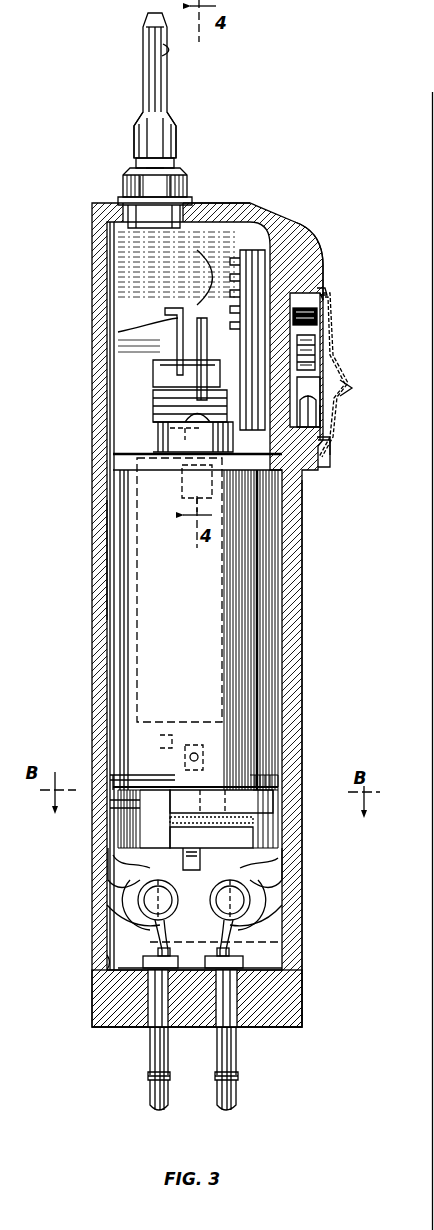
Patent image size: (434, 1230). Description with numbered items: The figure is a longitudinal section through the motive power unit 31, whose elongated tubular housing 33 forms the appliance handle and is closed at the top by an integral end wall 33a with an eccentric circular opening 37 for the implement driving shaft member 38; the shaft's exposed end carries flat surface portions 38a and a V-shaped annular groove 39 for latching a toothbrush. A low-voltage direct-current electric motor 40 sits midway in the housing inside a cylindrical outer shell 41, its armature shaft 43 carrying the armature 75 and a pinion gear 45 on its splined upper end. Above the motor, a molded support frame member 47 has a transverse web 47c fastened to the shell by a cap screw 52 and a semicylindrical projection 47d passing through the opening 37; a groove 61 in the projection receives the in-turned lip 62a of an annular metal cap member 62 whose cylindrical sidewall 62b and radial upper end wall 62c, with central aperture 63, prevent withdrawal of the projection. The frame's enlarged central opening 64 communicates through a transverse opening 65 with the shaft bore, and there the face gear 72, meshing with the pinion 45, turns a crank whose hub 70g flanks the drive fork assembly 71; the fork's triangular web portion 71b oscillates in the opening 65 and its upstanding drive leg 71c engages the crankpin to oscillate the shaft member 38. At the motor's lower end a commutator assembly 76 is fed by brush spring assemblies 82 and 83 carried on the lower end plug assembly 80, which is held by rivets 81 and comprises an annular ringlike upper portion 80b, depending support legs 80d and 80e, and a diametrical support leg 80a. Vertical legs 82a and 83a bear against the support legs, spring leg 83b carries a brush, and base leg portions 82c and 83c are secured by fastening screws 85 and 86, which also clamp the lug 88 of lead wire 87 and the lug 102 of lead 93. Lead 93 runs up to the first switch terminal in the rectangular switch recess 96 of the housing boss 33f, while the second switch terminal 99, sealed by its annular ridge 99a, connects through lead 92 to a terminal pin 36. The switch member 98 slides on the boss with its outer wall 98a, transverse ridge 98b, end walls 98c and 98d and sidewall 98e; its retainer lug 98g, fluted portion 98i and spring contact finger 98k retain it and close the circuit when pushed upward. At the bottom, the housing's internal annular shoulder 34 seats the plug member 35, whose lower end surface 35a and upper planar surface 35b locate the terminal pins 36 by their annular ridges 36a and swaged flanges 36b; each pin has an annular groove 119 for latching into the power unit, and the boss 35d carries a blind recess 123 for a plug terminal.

The motive power unit 31 is at (302, 650).
The tubular casing or housing 33 is at (302, 598).
The upper end wall 33a is at (238, 222).
The boss or projection 33f is at (322, 265).
The internal annular shoulder or recess 34 is at (303, 990).
The lower end plug or cap member 35 is at (263, 1028).
The lower end surface 35a is at (285, 1029).
The upper transverse planar surface 35b is at (106, 959).
The projection or boss 35d is at (255, 957).
The electrical terminal pins 36 is at (220, 1098).
The annular ridge 36a is at (189, 1030).
The annular flanges 36b is at (230, 944).
The circular opening 37 is at (114, 222).
The shaft member 38 is at (141, 79).
The flat surface portions 38a is at (164, 53).
The V-shaped annular groove 39 is at (140, 132).
The electric motor 40 is at (106, 557).
The outer shell or sleeve 41 is at (118, 500).
The armature shaft 43 is at (120, 470).
The pinion gear 45 is at (200, 407).
The support frame member 47 is at (106, 251).
The transverse base or web 47c is at (172, 440).
The semicylindrical projection 47d is at (196, 211).
The cap screw 52 is at (180, 427).
The groove 61 is at (120, 202).
The cap member 62 is at (183, 182).
The in-turned lip or flange 62a is at (128, 186).
The cylindrical sidewall 62b is at (188, 190).
The radial upper end wall 62c is at (128, 178).
The central aperture 63 is at (162, 176).
The enlarged central opening 64 is at (207, 263).
The transverse recess or opening 65 is at (98, 333).
The crank hub 70g is at (150, 322).
The drive fork assembly 71 is at (170, 357).
The triangular web portion 71b is at (40, 378).
The drive leg 71c is at (192, 300).
The face gear 72 is at (244, 250).
The motor armature 75 is at (138, 590).
The commutator assembly 76 is at (258, 772).
The lower end plug assembly 80 is at (193, 905).
The support leg 80a is at (166, 815).
The annular ringlike upper portion 80b is at (167, 735).
The support leg 80d is at (265, 848).
The support leg 80e is at (125, 805).
The rivets 81 is at (196, 752).
The brush spring assembly 82 is at (108, 840).
The upstanding vertical leg 82a is at (120, 780).
The base leg portion 82c is at (120, 818).
The brush spring assembly 83 is at (272, 835).
The upstanding vertical leg 83a is at (280, 800).
The brush-supporting spring leg 83b is at (258, 778).
The base leg portion 83c is at (278, 846).
The fastening screw 85 is at (113, 870).
The fastening screw 86 is at (285, 872).
The lead wire 87 is at (130, 920).
The lug 88 is at (118, 880).
The lead 92 is at (298, 920).
The lead 93 is at (280, 800).
The switch recess 96 is at (318, 312).
The switch member 98 is at (326, 458).
The outer wall 98a is at (324, 428).
The transverse ridge 98b is at (350, 388).
The end wall 98c is at (322, 303).
The end wall 98d is at (320, 468).
The sidewall 98e is at (330, 447).
The retainer lug 98g is at (320, 405).
The fluted portion 98i is at (320, 360).
The spring contact finger 98k is at (316, 338).
The second switch terminal 99 is at (318, 320).
The annular ridge 99a is at (320, 288).
The lug 102 is at (275, 890).
The annular groove 119 is at (218, 1078).
The blind recess 123 is at (282, 942).